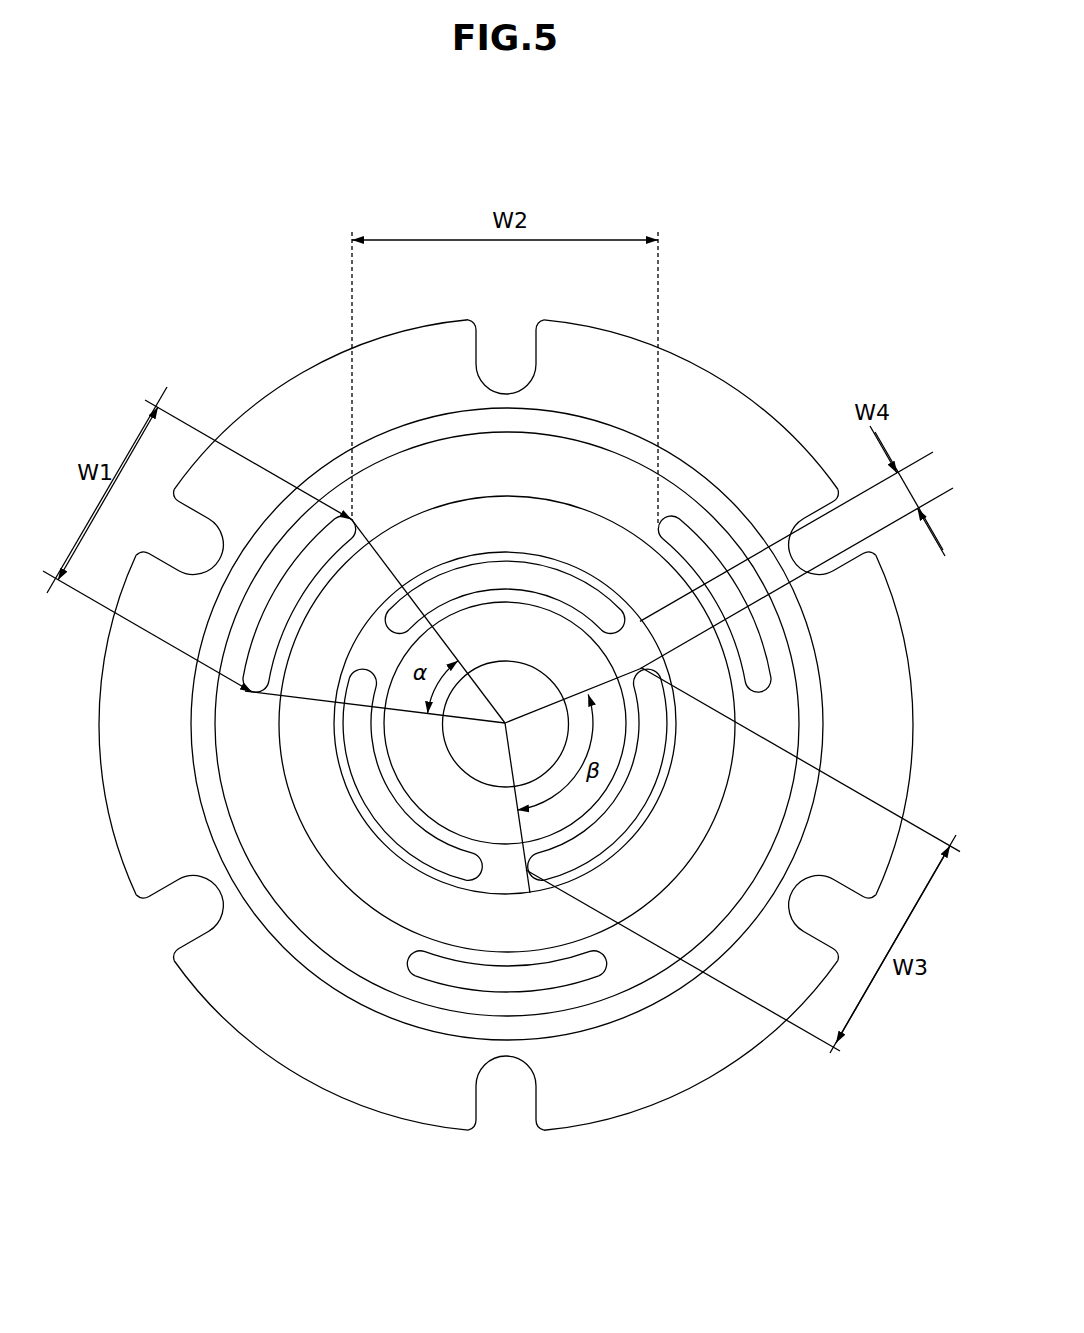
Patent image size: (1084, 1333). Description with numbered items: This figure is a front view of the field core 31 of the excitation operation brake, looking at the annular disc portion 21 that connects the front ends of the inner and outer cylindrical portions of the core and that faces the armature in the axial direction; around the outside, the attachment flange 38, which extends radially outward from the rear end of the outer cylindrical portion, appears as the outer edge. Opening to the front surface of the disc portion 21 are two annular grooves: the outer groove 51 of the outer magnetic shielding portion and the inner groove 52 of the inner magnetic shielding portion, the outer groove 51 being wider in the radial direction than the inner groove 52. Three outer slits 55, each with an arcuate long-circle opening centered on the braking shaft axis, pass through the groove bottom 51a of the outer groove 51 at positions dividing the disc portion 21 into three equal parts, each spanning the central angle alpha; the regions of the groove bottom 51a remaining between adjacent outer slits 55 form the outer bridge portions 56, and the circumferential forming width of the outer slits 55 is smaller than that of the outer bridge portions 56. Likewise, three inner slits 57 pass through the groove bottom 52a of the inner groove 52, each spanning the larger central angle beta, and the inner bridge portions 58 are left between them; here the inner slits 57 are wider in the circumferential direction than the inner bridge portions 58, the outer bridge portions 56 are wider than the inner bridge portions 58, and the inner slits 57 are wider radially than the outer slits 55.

The disc portion 21 is at (322, 484).
The field core 31 is at (337, 457).
The attachment flange 38 is at (688, 372).
The outer groove 51 is at (641, 992).
The groove bottom 51a is at (417, 995).
The inner groove 52 is at (343, 766).
The groove bottom 52a is at (352, 796).
The outer slit 55 is at (755, 673).
The outer bridge portion 56 is at (545, 470).
The inner slit 57 is at (458, 583).
The inner bridge portion 58 is at (655, 652).